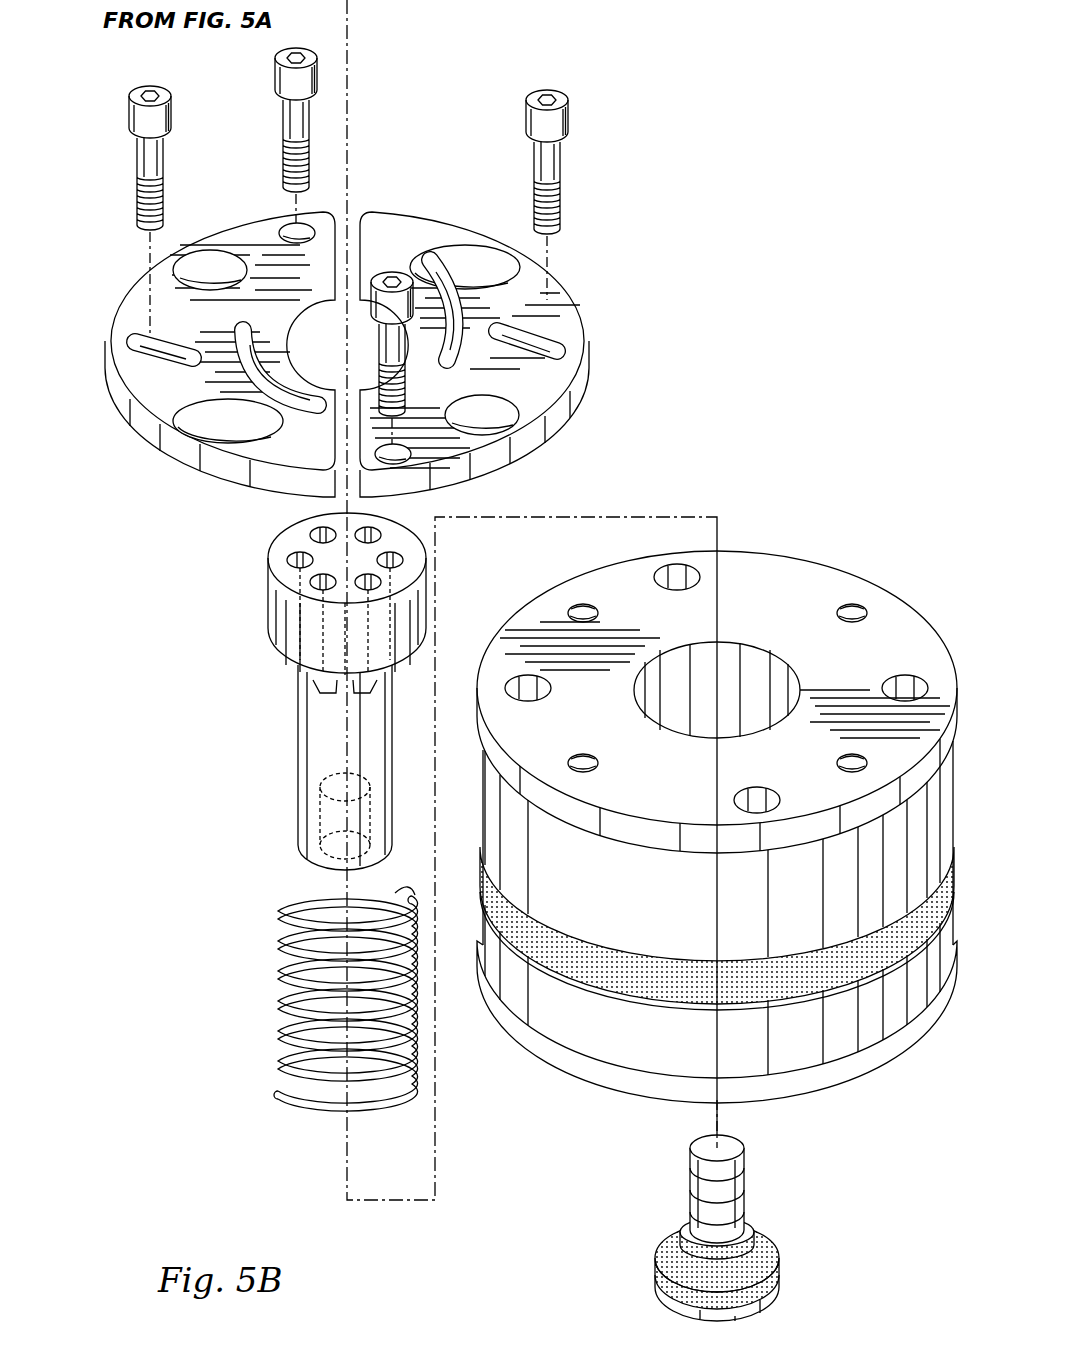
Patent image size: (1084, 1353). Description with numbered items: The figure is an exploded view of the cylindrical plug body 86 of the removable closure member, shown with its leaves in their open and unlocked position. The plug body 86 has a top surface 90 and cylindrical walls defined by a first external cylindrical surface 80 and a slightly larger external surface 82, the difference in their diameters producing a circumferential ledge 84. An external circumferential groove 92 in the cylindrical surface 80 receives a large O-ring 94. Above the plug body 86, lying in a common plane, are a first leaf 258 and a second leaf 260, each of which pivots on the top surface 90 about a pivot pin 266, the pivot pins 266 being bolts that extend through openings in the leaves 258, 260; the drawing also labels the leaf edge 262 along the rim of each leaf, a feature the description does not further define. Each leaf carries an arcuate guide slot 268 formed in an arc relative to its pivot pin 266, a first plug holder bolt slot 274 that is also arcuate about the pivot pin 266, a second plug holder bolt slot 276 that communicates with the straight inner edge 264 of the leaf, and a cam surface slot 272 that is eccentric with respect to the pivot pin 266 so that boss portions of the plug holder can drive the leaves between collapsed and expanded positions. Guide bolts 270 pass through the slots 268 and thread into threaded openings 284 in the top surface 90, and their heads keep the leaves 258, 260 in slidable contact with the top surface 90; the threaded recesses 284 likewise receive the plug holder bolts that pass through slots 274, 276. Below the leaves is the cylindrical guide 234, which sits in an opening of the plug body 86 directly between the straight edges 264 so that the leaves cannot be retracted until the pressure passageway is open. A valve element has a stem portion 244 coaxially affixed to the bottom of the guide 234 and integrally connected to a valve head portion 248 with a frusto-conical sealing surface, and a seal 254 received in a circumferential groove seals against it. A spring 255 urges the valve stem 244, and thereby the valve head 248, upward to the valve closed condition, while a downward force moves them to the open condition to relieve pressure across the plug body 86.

The first external cylindrical surface 80 is at (513, 817).
The slightly larger external surface 82 is at (480, 727).
The circumferential ledge 84 is at (692, 855).
The cylindrical plug body 86 is at (533, 1073).
The top surface 90 is at (790, 603).
The external circumferential groove 92 is at (636, 948).
The large O-ring 94 is at (500, 910).
The cylindrical guide 234 is at (268, 610).
The stem portion 244 is at (742, 1177).
The valve head portion 248 is at (663, 1308).
The seal 254 is at (777, 1238).
The spring 255 is at (285, 920).
The first leaf 258 is at (142, 292).
The second leaf 260 is at (557, 292).
The plate rim 262 is at (586, 393).
The straight inner edge 264 is at (340, 240).
The pivot pin 266 is at (278, 62).
The arcuate guide slot 268 is at (148, 340).
The guide bolt 270 is at (158, 87).
The cam surface slot 272 is at (448, 318).
The first plug holder bolt slot 274 is at (217, 262).
The second plug holder bolt slot 276 is at (253, 417).
The threaded opening 284 is at (580, 603).